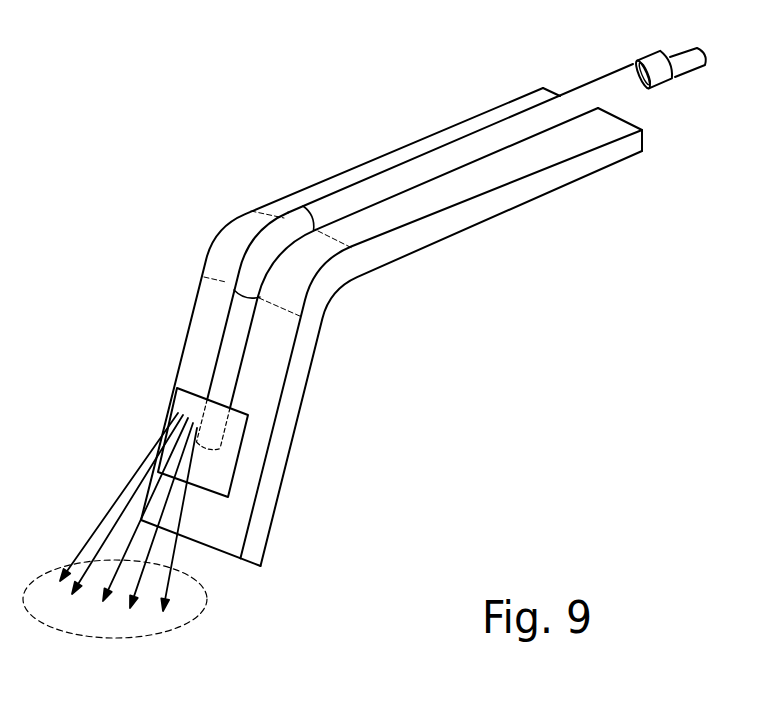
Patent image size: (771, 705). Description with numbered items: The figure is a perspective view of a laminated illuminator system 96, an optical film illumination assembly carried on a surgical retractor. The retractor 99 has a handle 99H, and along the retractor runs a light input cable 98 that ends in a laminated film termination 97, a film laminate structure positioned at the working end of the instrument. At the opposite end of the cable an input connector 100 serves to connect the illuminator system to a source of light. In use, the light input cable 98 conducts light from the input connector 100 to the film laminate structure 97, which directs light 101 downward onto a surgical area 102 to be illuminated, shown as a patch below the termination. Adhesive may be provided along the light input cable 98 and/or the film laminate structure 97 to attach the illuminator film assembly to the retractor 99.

The laminated illuminator system 96 is at (214, 183).
The laminated film termination 97 is at (235, 468).
The light input cable 98 is at (390, 182).
The retractor 99 is at (277, 210).
The handle 99H is at (528, 102).
The input connector 100 is at (663, 83).
The light 101 is at (125, 510).
The surgical area 102 is at (157, 622).